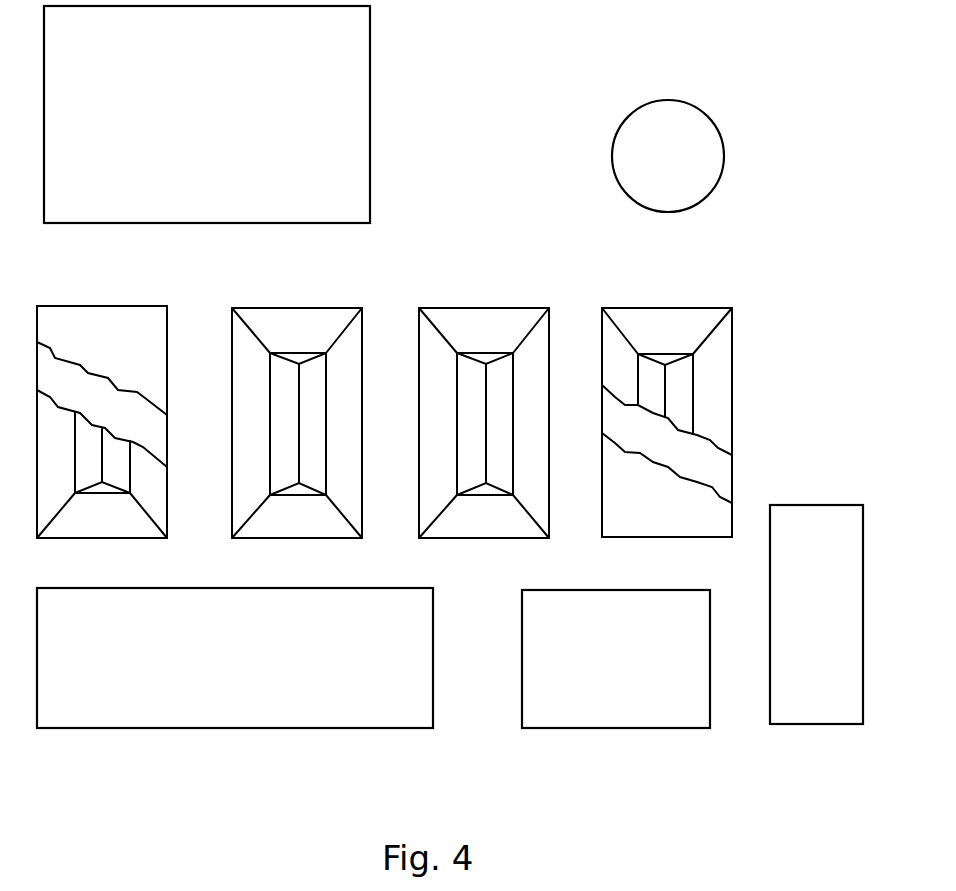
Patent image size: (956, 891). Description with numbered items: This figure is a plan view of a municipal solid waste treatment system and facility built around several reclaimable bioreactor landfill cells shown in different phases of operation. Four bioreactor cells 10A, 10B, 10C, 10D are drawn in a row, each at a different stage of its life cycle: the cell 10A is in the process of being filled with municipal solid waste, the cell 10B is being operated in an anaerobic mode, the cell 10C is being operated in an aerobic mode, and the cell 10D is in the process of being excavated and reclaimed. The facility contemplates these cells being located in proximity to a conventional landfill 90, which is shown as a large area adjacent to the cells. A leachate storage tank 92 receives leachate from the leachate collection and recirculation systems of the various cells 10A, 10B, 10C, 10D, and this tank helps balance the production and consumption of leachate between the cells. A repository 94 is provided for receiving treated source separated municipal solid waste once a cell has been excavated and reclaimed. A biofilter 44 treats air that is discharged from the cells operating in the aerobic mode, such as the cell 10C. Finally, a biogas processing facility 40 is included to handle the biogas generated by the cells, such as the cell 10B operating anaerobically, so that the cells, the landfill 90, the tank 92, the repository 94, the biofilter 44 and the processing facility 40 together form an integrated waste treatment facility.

The conventional landfill 90 is at (207, 114).
The leachate storage tank 92 is at (668, 156).
The biofilter 44 is at (235, 658).
The biogas processing facility 40 is at (616, 659).
The repository 94 is at (816, 614).
The bioreactor cell 10A is at (115, 333).
The bioreactor cell 10B is at (315, 328).
The bioreactor cell 10C is at (498, 328).
The bioreactor cell 10D is at (683, 325).